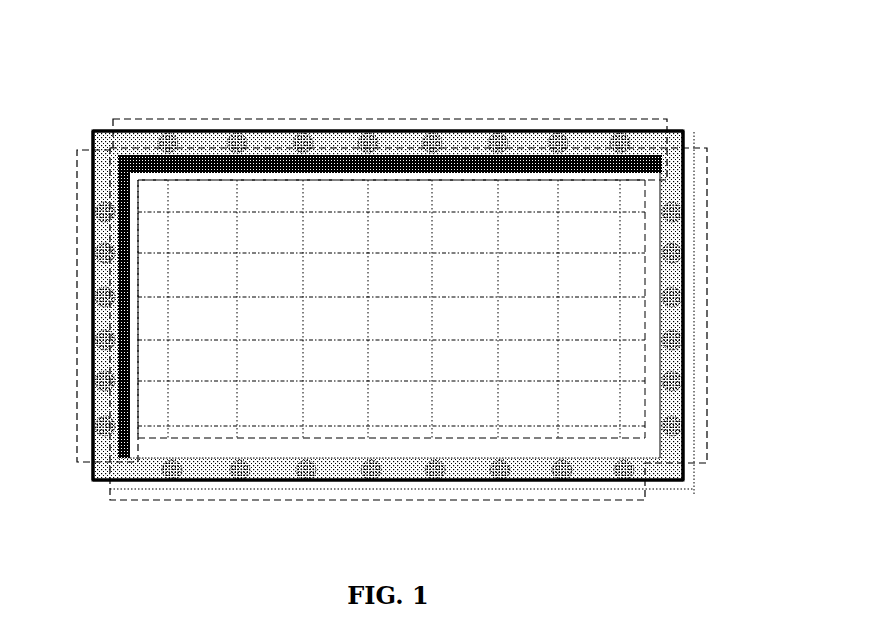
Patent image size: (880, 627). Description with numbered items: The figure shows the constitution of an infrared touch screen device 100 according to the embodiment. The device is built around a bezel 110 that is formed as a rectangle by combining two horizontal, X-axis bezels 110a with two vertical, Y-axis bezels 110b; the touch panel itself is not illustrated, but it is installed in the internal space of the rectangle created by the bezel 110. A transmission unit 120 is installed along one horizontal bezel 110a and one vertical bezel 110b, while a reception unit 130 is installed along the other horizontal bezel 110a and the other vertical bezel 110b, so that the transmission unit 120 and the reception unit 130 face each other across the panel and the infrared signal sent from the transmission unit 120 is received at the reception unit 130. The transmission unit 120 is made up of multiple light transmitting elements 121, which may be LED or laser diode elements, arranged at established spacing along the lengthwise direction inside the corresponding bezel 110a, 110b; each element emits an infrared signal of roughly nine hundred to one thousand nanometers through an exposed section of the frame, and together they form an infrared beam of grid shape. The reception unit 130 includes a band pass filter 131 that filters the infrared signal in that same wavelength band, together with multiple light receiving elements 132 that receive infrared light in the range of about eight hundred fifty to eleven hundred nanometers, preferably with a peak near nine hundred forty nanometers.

The infrared touch screen device 100 is at (376, 40).
The bezel 110 is at (685, 135).
The horizontal bezel 110a is at (653, 142).
The vertical bezel 110b is at (675, 400).
The transmission unit 120 is at (708, 241).
The light transmitting element 121 is at (683, 297).
The reception unit 130 is at (215, 119).
The band pass filter 131 is at (327, 155).
The light receiving element 132 is at (427, 133).